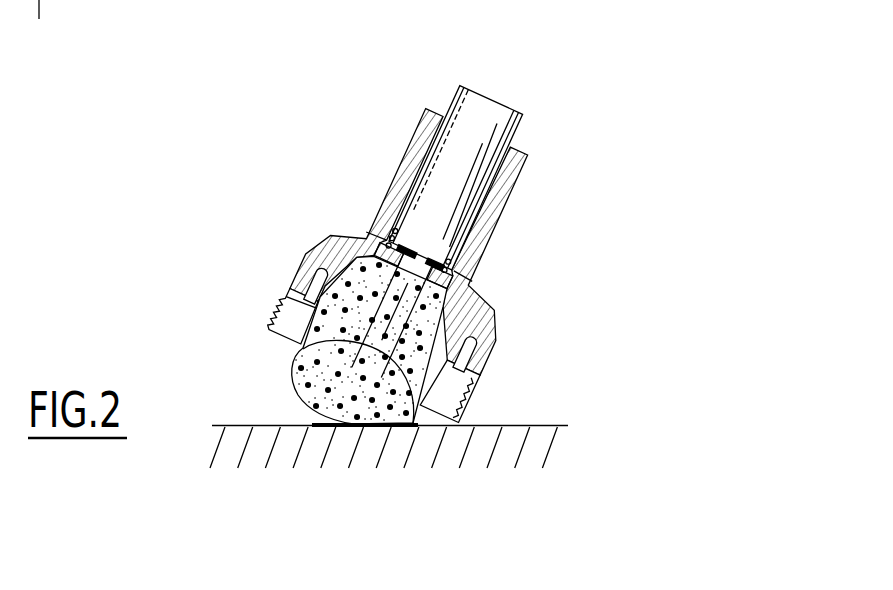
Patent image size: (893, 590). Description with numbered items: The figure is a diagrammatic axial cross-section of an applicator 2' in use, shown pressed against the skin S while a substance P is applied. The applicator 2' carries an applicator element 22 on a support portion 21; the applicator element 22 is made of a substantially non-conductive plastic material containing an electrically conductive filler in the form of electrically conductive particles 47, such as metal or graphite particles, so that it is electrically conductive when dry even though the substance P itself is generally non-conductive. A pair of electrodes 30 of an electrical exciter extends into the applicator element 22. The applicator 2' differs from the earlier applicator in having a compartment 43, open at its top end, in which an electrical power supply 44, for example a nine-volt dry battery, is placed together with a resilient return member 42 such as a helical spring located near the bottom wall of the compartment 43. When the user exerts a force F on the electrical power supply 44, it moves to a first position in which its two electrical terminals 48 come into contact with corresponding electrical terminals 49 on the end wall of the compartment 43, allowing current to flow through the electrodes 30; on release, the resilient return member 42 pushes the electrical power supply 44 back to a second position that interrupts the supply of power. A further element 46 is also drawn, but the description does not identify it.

The applicator 2' is at (350, 115).
The support portion 21 is at (294, 282).
The applicator element 22 is at (303, 388).
The electrodes 30 is at (305, 349).
The resilient return member 42 is at (453, 272).
The compartment 43 is at (376, 242).
The electrical power supply 44 is at (498, 124).
The gasket 46 is at (455, 286).
The electrically conductive particles 47 is at (443, 350).
The electrical terminals of the electrical power supply 48 is at (416, 232).
The electrical terminals of the compartment 49 is at (387, 262).
The force F is at (505, 77).
The substance P is at (308, 424).
The skin S is at (540, 426).